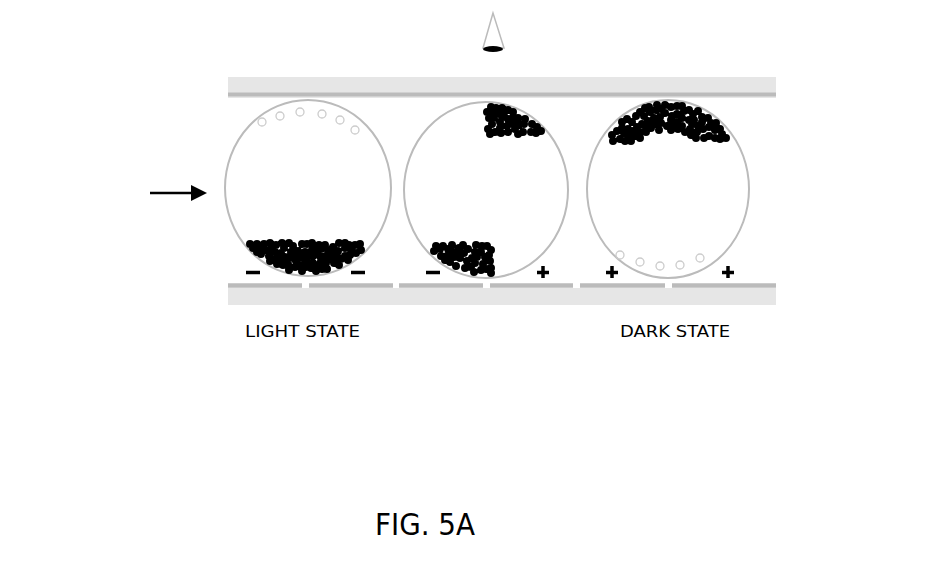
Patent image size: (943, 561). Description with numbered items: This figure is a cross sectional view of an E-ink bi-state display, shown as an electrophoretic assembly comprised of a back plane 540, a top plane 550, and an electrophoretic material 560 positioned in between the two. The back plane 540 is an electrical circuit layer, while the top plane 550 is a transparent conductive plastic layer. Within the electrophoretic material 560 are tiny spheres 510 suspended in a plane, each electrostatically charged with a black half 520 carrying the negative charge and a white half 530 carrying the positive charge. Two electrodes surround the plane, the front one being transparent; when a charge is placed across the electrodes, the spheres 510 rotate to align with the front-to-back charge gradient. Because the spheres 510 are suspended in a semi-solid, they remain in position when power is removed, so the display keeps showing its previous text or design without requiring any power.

The spheres 510 is at (240, 195).
The black half 520 is at (280, 264).
The white half 530 is at (272, 132).
The back plane 540 is at (233, 290).
The top plane 550 is at (241, 88).
The electrophoretic material 560 is at (144, 198).